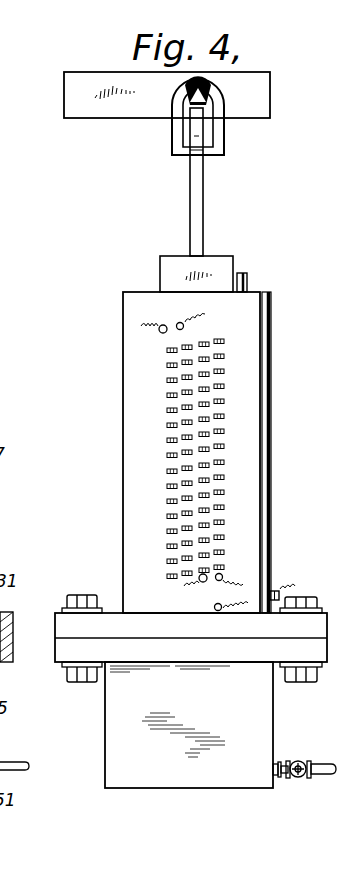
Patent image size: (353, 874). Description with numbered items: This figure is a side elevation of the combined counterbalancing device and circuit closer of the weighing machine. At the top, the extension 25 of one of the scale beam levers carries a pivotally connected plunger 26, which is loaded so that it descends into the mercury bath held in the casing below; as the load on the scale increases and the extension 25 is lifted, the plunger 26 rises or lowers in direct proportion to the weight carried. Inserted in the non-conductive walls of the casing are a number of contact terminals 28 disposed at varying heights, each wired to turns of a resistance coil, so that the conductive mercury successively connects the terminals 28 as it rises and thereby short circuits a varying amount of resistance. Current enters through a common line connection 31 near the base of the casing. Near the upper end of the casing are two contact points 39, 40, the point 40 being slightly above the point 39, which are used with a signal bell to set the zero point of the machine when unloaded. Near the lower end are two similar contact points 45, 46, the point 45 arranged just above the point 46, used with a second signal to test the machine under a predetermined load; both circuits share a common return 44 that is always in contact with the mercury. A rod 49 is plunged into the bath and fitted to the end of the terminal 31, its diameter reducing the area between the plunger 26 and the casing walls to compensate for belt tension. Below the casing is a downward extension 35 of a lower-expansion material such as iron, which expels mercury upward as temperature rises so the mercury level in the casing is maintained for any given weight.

The extension 25 is at (63, 86).
The plunger 26 is at (233, 265).
The rod 49 is at (248, 278).
The contact terminals 28 is at (205, 448).
The contact point 39 is at (159, 331).
The contact point 40 is at (184, 325).
The contact point 45 is at (223, 575).
The contact point 46 is at (201, 582).
The common return 44 is at (217, 611).
The common line connection 31 is at (284, 594).
The downward extension 35 is at (189, 725).